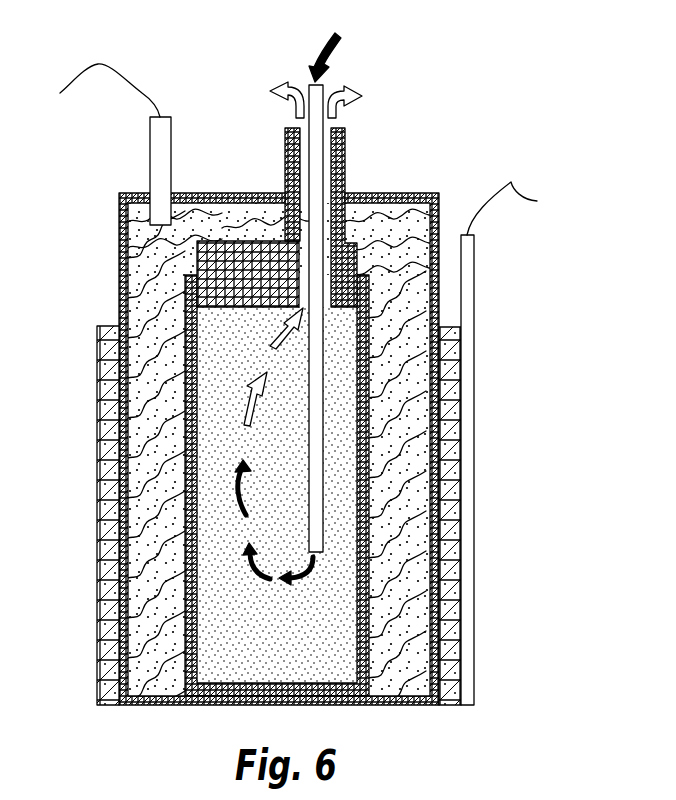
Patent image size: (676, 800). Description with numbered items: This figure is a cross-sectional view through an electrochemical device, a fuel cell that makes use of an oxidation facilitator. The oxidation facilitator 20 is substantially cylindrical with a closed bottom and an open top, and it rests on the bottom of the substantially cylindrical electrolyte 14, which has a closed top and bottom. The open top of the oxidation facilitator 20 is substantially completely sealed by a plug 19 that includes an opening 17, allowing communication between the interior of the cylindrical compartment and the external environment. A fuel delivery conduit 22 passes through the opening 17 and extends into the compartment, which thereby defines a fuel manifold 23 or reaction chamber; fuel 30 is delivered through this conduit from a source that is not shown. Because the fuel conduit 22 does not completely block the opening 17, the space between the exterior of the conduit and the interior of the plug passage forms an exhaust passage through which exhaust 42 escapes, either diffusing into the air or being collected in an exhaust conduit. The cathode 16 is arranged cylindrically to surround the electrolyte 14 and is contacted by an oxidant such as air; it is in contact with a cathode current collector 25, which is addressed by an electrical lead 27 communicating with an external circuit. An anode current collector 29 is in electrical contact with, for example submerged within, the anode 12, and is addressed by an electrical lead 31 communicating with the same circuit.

The anode 12 is at (147, 245).
The electrolyte 14 is at (441, 200).
The cathode 16 is at (443, 398).
The opening 17 is at (304, 140).
The plug 19 is at (260, 280).
The oxidation facilitator 20 is at (186, 291).
The fuel delivery conduit 22 is at (308, 82).
The manifold 23 is at (289, 658).
The cathode current collector 25 is at (467, 271).
The electrical lead 27 is at (514, 208).
The anode current collector 29 is at (157, 167).
The fuel 30 is at (278, 604).
The electrical lead 31 is at (101, 91).
The exhaust 42 is at (238, 348).